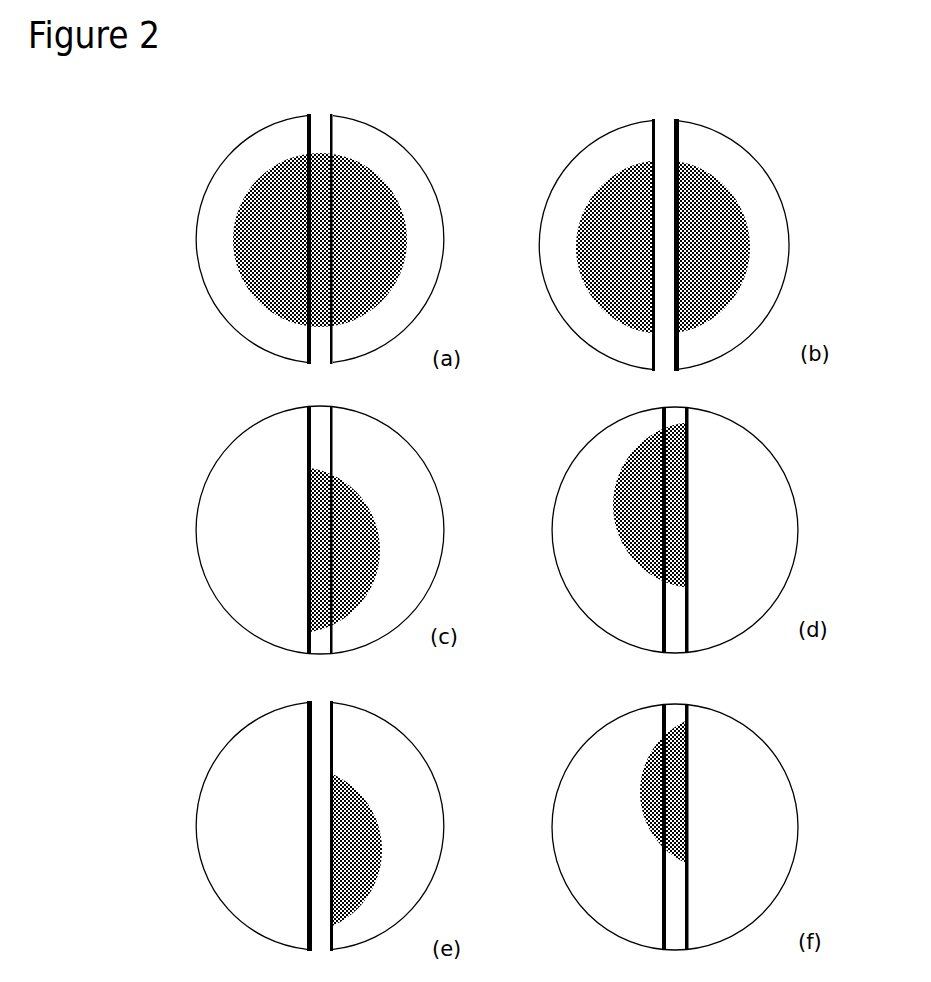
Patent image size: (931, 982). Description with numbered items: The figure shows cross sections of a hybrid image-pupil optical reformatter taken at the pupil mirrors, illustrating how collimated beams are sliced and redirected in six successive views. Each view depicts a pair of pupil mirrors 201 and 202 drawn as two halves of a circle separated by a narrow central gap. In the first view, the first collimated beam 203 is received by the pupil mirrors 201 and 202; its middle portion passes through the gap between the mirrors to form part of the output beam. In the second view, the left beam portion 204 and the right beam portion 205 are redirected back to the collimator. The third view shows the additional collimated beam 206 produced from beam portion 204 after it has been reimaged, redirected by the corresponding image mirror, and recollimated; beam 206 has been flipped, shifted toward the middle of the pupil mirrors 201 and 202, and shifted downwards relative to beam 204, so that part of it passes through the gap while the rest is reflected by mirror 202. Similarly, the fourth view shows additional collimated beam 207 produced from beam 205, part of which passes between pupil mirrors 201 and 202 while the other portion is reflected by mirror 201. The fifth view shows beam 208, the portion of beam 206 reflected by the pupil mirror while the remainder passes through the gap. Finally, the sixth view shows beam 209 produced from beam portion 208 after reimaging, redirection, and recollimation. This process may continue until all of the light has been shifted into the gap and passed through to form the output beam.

The pupil mirror 201 is at (250, 155).
The pupil mirror 202 is at (383, 153).
The first collimated beam 203 is at (382, 228).
The left beam portion 204 is at (612, 262).
The right beam portion 205 is at (727, 247).
The additional collimated beam 206 is at (367, 537).
The additional collimated beam 207 is at (635, 513).
The reflected beam portion 208 is at (363, 842).
The recollimated beam 209 is at (653, 793).